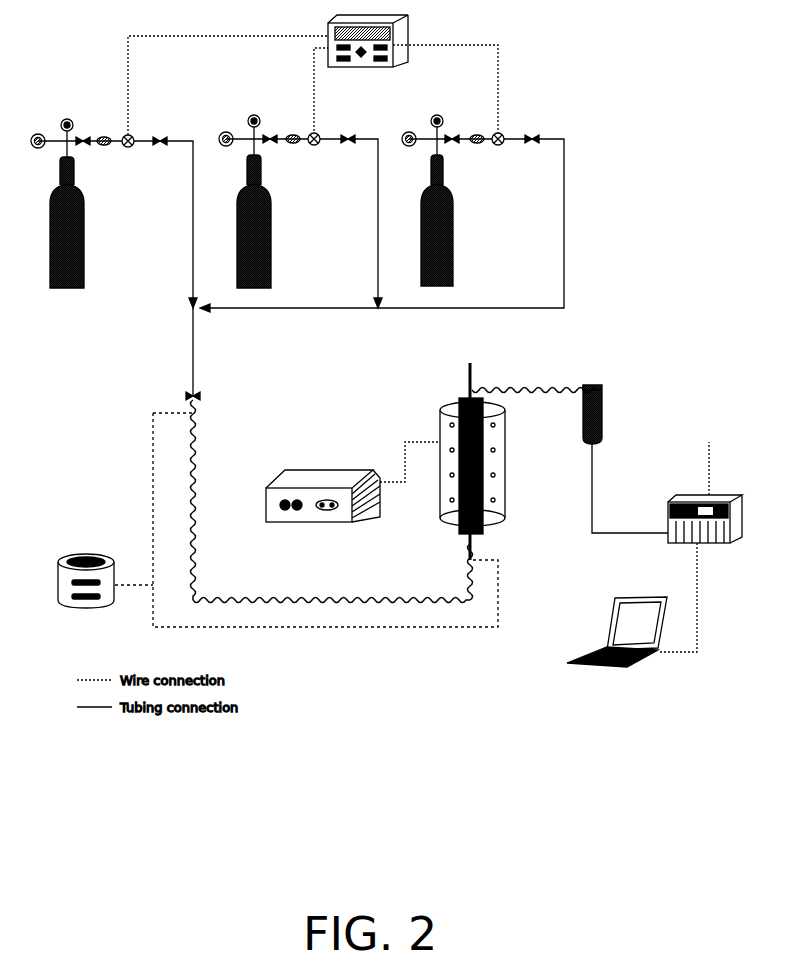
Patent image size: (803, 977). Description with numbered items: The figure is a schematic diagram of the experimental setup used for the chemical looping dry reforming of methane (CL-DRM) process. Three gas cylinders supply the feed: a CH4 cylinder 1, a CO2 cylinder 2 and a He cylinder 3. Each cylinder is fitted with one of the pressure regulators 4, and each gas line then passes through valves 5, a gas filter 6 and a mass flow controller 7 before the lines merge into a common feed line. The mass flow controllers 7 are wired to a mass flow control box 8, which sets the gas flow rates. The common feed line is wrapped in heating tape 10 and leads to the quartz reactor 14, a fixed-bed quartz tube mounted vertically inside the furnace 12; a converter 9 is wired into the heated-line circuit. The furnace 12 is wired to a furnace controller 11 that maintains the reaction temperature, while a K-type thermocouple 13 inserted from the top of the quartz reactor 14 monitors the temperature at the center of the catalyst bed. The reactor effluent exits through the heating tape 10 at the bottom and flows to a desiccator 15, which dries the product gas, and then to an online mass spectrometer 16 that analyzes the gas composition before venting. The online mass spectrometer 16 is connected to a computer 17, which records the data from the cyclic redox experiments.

The CH4 cylinder 1 is at (57, 214).
The CO2 cylinder 2 is at (245, 213).
The He cylinder 3 is at (426, 212).
The pressure regulators 4 is at (243, 127).
The valves 5 is at (465, 153).
The gas filter 6 is at (290, 128).
The mass flow controller 7 is at (313, 151).
The mass flow control box 8 is at (368, 51).
The converter 9 is at (86, 569).
The heating tape 10 is at (203, 596).
The furnace controller 11 is at (323, 507).
The furnace 12 is at (485, 464).
The K-type thermocouple 13 is at (470, 372).
The quartz reactor 14 is at (482, 463).
The desiccator 15 is at (625, 459).
The online mass spectrometer 16 is at (690, 483).
The computer 17 is at (632, 605).